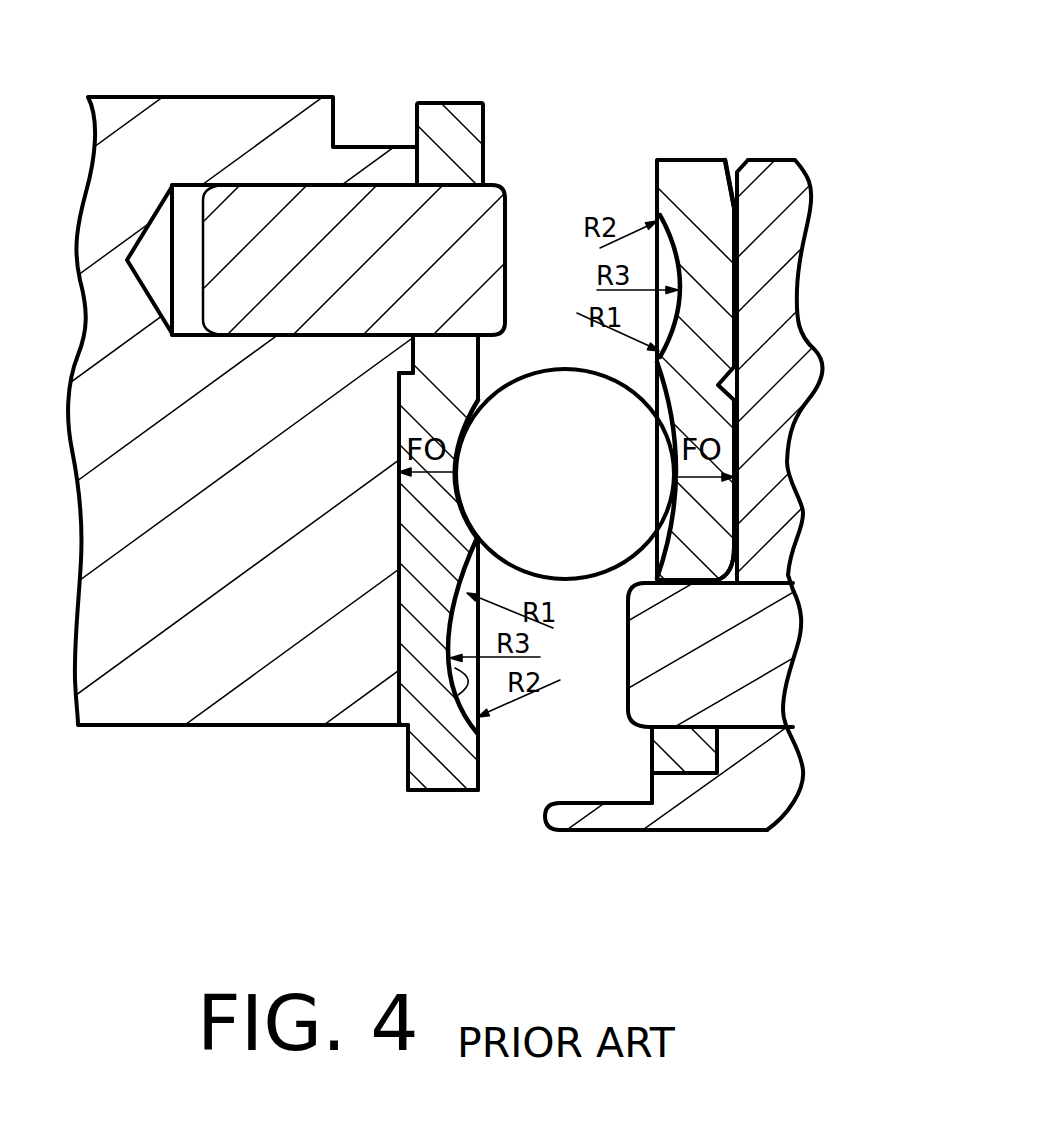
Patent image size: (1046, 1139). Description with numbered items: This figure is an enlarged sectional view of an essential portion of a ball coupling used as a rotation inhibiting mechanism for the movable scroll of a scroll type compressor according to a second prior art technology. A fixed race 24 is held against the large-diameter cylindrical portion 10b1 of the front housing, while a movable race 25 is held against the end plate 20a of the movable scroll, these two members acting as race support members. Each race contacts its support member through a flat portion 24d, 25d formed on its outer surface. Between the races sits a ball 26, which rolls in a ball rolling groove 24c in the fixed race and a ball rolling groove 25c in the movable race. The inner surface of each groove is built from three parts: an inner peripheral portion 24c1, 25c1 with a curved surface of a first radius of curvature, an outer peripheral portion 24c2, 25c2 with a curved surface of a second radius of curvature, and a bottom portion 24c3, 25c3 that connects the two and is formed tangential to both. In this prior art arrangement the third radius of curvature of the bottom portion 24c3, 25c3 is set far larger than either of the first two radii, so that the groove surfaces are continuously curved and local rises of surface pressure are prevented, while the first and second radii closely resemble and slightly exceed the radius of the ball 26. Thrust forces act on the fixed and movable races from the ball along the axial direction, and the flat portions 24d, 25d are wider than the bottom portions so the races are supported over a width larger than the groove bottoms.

The large-diameter cylindrical portion 10b1 is at (230, 727).
The end plate 20a is at (767, 770).
The fixed race 24 is at (460, 103).
The ball rolling groove 24c is at (510, 625).
The inner peripheral portion 24c1 is at (535, 628).
The outer peripheral portion 24c2 is at (487, 720).
The bottom portion 24c3 is at (412, 747).
The flat portion 24d is at (365, 727).
The movable race 25 is at (695, 160).
The ball rolling groove 25c is at (711, 339).
The inner peripheral portion 25c1 is at (665, 350).
The outer peripheral portion 25c2 is at (645, 214).
The bottom portion 25c3 is at (682, 302).
The flat portion 25d is at (733, 527).
The ball 26 is at (568, 553).